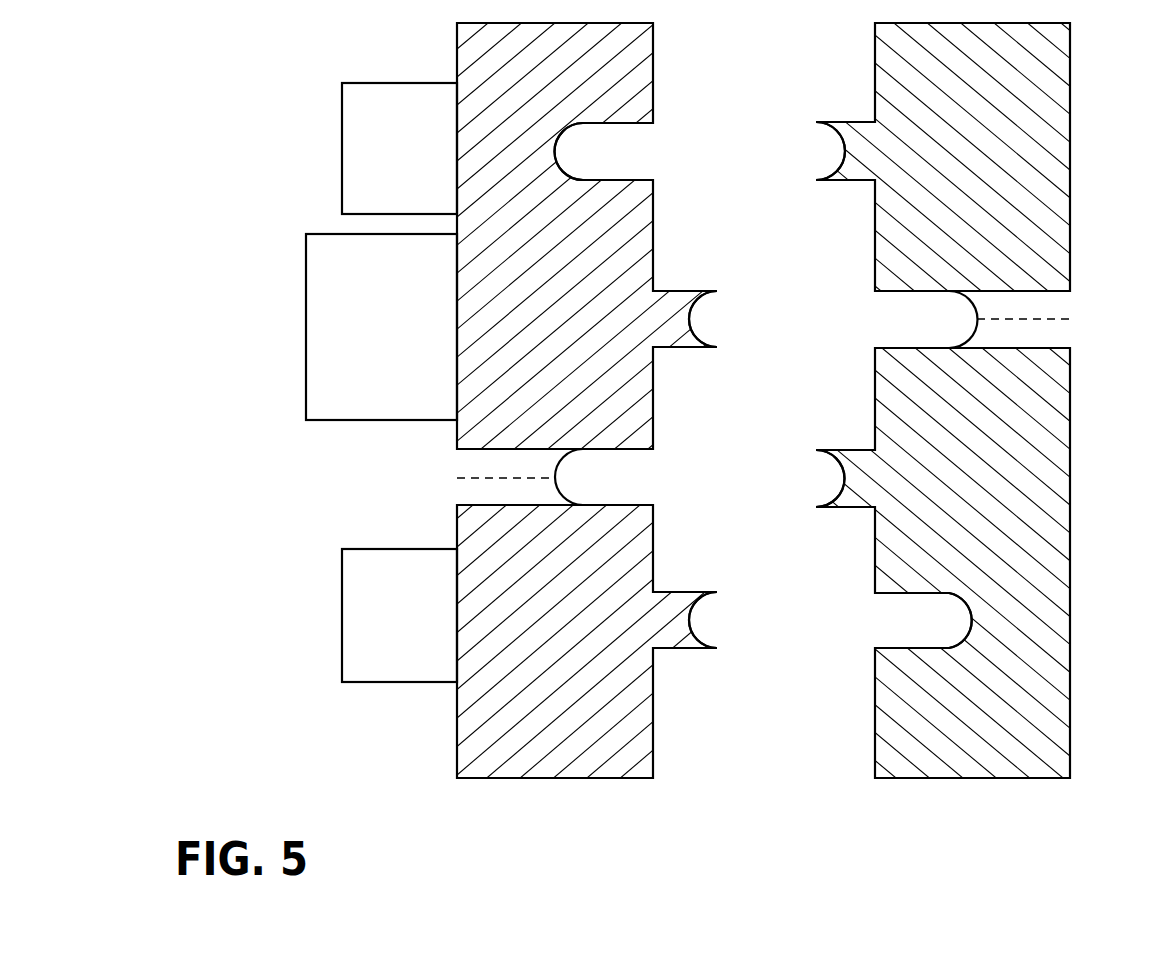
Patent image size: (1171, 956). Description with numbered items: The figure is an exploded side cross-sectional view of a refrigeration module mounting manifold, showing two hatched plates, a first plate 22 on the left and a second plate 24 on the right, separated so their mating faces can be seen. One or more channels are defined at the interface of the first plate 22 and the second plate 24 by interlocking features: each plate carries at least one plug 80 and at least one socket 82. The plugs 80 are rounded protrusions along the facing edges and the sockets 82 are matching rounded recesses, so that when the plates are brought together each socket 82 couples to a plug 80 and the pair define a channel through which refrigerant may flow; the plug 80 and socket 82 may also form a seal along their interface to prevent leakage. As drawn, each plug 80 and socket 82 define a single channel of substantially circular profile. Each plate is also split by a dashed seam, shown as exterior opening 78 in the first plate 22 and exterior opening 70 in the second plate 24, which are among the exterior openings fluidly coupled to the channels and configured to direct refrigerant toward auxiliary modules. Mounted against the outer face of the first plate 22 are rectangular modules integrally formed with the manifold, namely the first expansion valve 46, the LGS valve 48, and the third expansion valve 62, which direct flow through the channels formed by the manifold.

The first plate 22 is at (592, 779).
The second plate 24 is at (980, 779).
The first expansion valve 46 is at (342, 144).
The LGS valve 48 is at (306, 288).
The third expansion valve 62 is at (342, 572).
The exterior opening 70 is at (1072, 297).
The exterior opening 78 is at (457, 468).
The plug 80 is at (821, 134).
The socket 82 is at (607, 180).